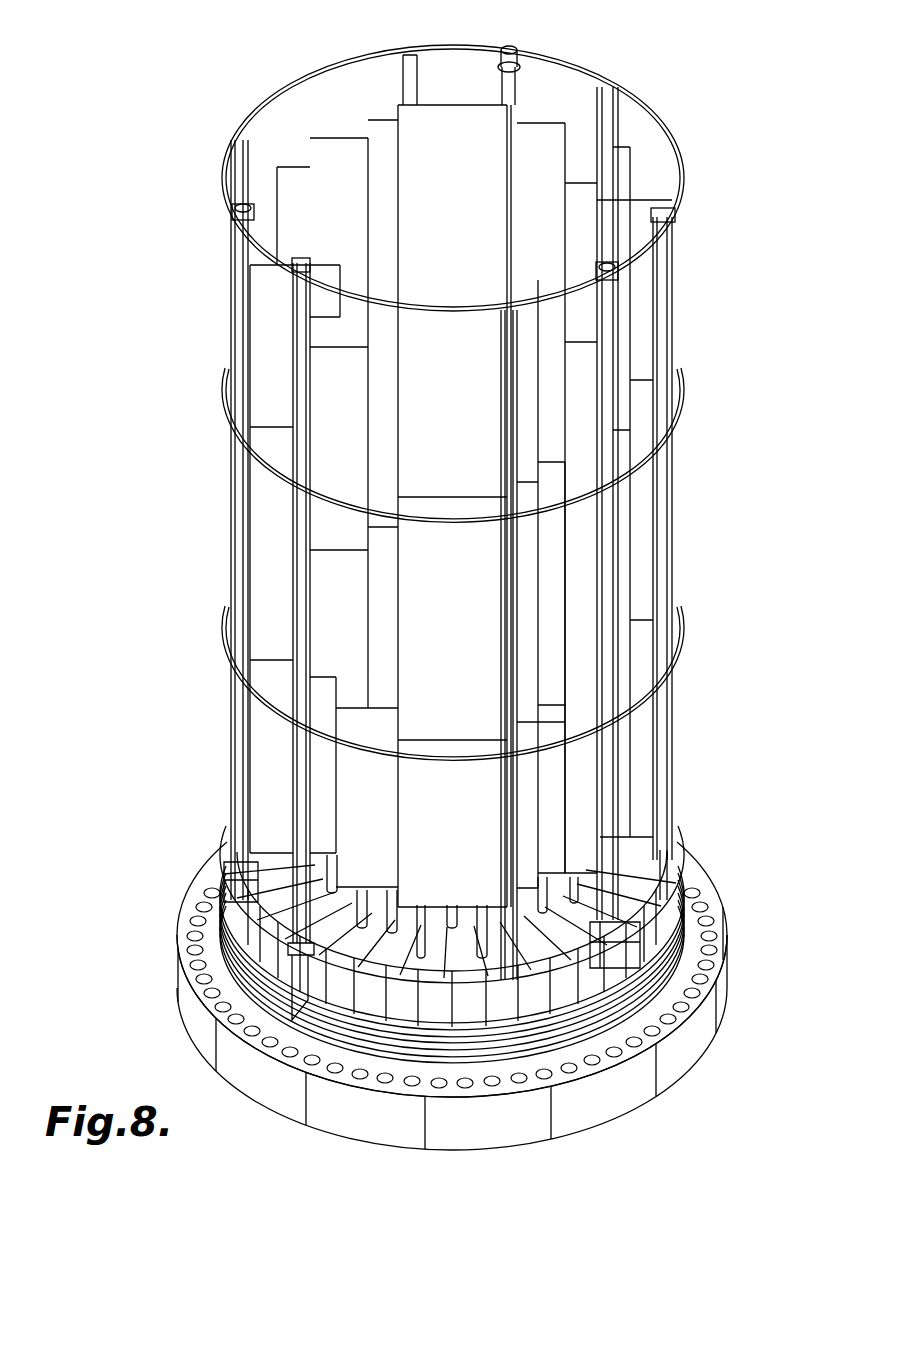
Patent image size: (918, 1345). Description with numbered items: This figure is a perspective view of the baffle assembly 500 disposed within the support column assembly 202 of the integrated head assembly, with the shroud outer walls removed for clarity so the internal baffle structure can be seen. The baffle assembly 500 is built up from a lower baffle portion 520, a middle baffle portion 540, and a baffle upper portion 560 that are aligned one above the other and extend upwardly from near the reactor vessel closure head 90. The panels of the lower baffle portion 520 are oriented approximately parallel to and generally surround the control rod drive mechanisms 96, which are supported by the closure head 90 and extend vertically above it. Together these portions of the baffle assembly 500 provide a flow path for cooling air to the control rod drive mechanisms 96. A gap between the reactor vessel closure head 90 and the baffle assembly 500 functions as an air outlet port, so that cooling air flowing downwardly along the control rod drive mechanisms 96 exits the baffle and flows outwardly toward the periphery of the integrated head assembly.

The reactor vessel closure head 90 is at (735, 991).
The control rod drive mechanisms 96 is at (478, 945).
The support column assembly 202 is at (672, 548).
The baffle assembly 500 is at (460, 108).
The lower baffle portion 520 is at (585, 745).
The middle baffle portion 540 is at (565, 528).
The baffle upper portion 560 is at (563, 365).